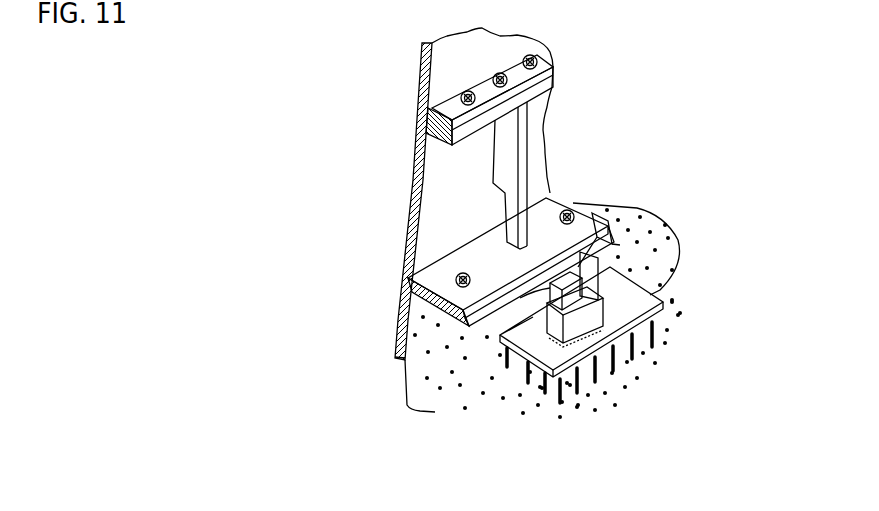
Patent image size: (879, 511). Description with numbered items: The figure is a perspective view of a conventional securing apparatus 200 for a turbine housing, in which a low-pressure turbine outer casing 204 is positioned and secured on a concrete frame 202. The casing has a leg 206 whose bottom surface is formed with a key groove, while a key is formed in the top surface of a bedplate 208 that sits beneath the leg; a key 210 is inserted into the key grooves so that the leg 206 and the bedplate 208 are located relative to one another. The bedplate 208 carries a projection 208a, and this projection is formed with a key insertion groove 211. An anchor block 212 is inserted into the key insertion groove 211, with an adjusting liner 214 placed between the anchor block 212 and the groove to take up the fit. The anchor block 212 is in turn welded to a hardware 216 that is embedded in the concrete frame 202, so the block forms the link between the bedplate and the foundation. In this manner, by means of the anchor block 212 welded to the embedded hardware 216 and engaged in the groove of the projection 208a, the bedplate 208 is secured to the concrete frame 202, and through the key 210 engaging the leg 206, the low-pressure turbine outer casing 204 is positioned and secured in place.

The securing apparatus 200 is at (364, 169).
The concrete frame 202 is at (654, 220).
The low-pressure turbine outer casing 204 is at (417, 145).
The leg 206 is at (405, 277).
The bedplate 208 is at (604, 268).
The projection 208a is at (600, 268).
The key 210 is at (482, 292).
The key insertion groove 211 is at (548, 287).
The anchor block 212 is at (527, 323).
The adjusting liner 214 is at (581, 275).
The hardware 216 is at (648, 292).